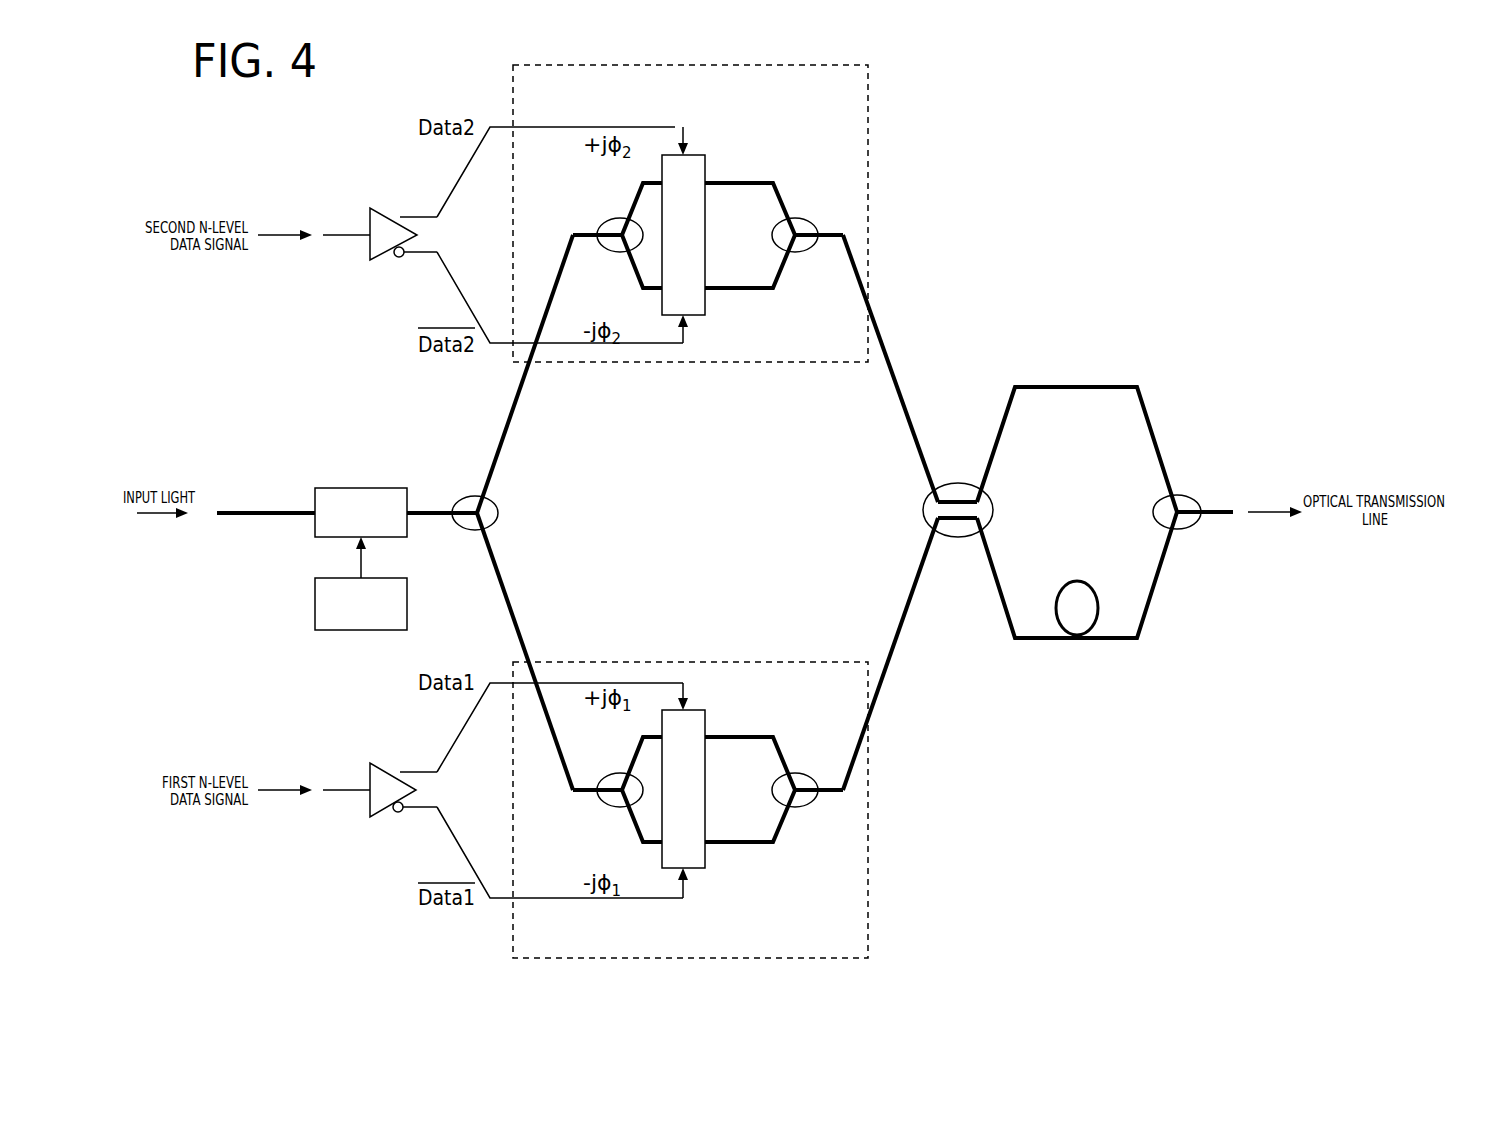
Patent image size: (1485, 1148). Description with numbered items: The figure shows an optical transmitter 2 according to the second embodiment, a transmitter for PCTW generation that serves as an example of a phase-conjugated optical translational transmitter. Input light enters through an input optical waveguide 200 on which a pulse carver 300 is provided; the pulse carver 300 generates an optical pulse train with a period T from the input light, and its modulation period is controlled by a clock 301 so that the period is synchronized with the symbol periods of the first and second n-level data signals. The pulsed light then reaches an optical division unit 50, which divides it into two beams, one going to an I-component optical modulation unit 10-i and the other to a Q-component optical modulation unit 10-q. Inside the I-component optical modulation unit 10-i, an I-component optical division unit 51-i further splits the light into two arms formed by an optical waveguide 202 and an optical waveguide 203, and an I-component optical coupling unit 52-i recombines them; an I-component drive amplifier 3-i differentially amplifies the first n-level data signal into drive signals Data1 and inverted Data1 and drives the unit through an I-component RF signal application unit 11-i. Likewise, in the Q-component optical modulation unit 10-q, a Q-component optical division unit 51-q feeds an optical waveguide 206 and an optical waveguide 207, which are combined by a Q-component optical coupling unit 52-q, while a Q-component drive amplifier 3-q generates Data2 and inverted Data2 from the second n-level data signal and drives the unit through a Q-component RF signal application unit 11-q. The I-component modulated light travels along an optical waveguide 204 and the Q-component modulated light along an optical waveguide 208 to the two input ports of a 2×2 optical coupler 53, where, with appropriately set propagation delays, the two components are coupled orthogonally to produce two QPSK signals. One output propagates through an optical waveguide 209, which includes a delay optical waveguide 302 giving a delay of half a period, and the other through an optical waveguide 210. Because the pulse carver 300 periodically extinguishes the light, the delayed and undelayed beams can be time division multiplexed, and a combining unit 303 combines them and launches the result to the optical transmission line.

The optical transmitter 2 is at (1250, 166).
The Q-component drive amplifier 3-q is at (387, 208).
The I-component drive amplifier 3-i is at (382, 763).
The Q-component optical modulation unit 10-q is at (869, 82).
The I-component optical modulation unit 10-i is at (869, 940).
The Q-component RF signal application unit 11-q is at (692, 315).
The I-component RF signal application unit 11-i is at (697, 710).
The optical division unit 50 is at (502, 508).
The Q-component optical division unit 51-q is at (610, 223).
The I-component optical division unit 51-i is at (605, 805).
The Q-component optical coupling unit 52-q is at (802, 223).
The I-component optical coupling unit 52-i is at (815, 805).
The 2×2 optical coupler 53 is at (923, 510).
The input optical waveguide 200 is at (260, 513).
The optical waveguide 202 is at (748, 737).
The optical waveguide 203 is at (747, 842).
The optical waveguide 204 is at (905, 603).
The optical waveguide 206 is at (748, 183).
The optical waveguide 207 is at (747, 288).
The optical waveguide 208 is at (905, 425).
The optical waveguide 209 is at (1040, 645).
The optical waveguide 210 is at (1072, 387).
The pulse carver 300 is at (358, 488).
The clock 301 is at (315, 600).
The delay optical waveguide 302 is at (1075, 582).
The combining unit 303 is at (1190, 495).